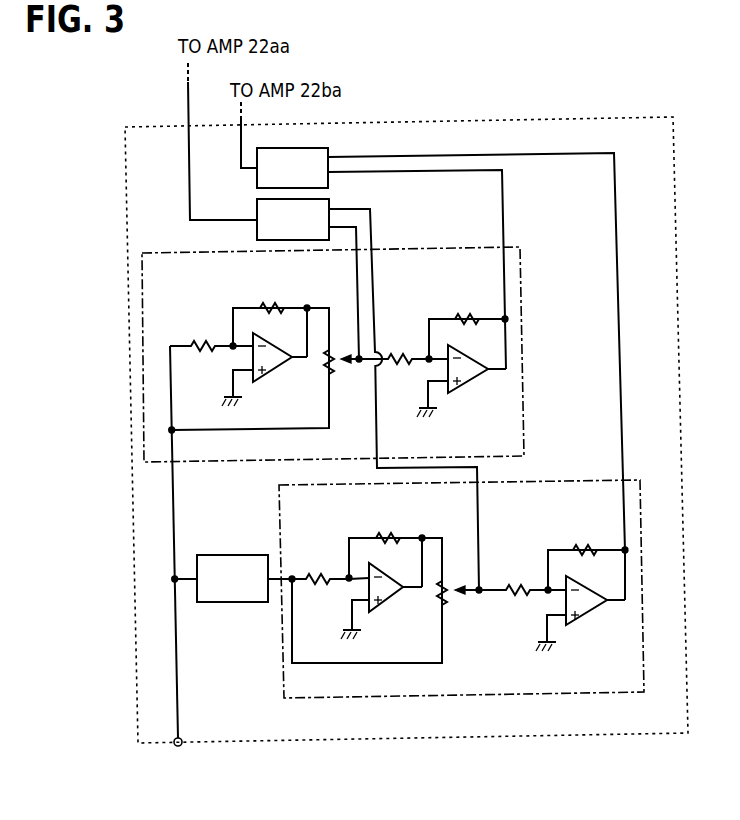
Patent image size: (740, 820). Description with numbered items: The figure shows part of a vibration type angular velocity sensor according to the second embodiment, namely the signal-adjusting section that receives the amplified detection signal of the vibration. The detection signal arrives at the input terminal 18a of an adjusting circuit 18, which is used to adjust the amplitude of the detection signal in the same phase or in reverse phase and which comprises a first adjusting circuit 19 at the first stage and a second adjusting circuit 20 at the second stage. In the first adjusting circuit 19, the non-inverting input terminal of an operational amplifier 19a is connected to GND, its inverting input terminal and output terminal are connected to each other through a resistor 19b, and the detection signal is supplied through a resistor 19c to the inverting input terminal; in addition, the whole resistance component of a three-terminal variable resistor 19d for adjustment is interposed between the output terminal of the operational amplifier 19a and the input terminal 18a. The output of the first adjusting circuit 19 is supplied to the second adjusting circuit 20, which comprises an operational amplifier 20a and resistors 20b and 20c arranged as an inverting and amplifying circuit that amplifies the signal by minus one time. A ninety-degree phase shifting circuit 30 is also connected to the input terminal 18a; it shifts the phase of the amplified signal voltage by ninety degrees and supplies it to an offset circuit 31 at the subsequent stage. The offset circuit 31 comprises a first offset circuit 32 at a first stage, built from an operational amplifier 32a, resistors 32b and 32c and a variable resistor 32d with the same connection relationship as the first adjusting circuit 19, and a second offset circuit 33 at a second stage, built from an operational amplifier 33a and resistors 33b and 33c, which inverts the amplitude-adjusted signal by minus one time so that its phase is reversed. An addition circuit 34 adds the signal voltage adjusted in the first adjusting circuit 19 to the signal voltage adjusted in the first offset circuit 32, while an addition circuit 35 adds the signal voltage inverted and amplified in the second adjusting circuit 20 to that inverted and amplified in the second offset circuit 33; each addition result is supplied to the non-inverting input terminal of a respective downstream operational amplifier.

The adjusting circuit 18 is at (523, 330).
The input terminal 18a is at (181, 758).
The first adjusting circuit 19 is at (267, 353).
The operational amplifier 19a is at (283, 365).
The resistor 19b is at (263, 302).
The resistor 19c is at (198, 333).
The variable resistor 19d is at (336, 372).
The second adjusting circuit 20 is at (452, 357).
The operational amplifier 20a is at (472, 376).
The resistor 20b is at (463, 310).
The resistor 20c is at (398, 350).
The 90-degree phase shifting circuit 30 is at (227, 553).
The offset circuit 31 is at (643, 580).
The first offset circuit 32 is at (393, 579).
The operational amplifier 32a is at (396, 593).
The resistor 32b is at (390, 530).
The resistor 32c is at (310, 568).
The variable resistor 32d is at (460, 598).
The second offset circuit 33 is at (558, 590).
The operational amplifier 33a is at (617, 663).
The resistor 33b is at (582, 537).
The resistor 33c is at (515, 578).
The addition circuit 34 is at (331, 208).
The addition circuit 35 is at (331, 156).